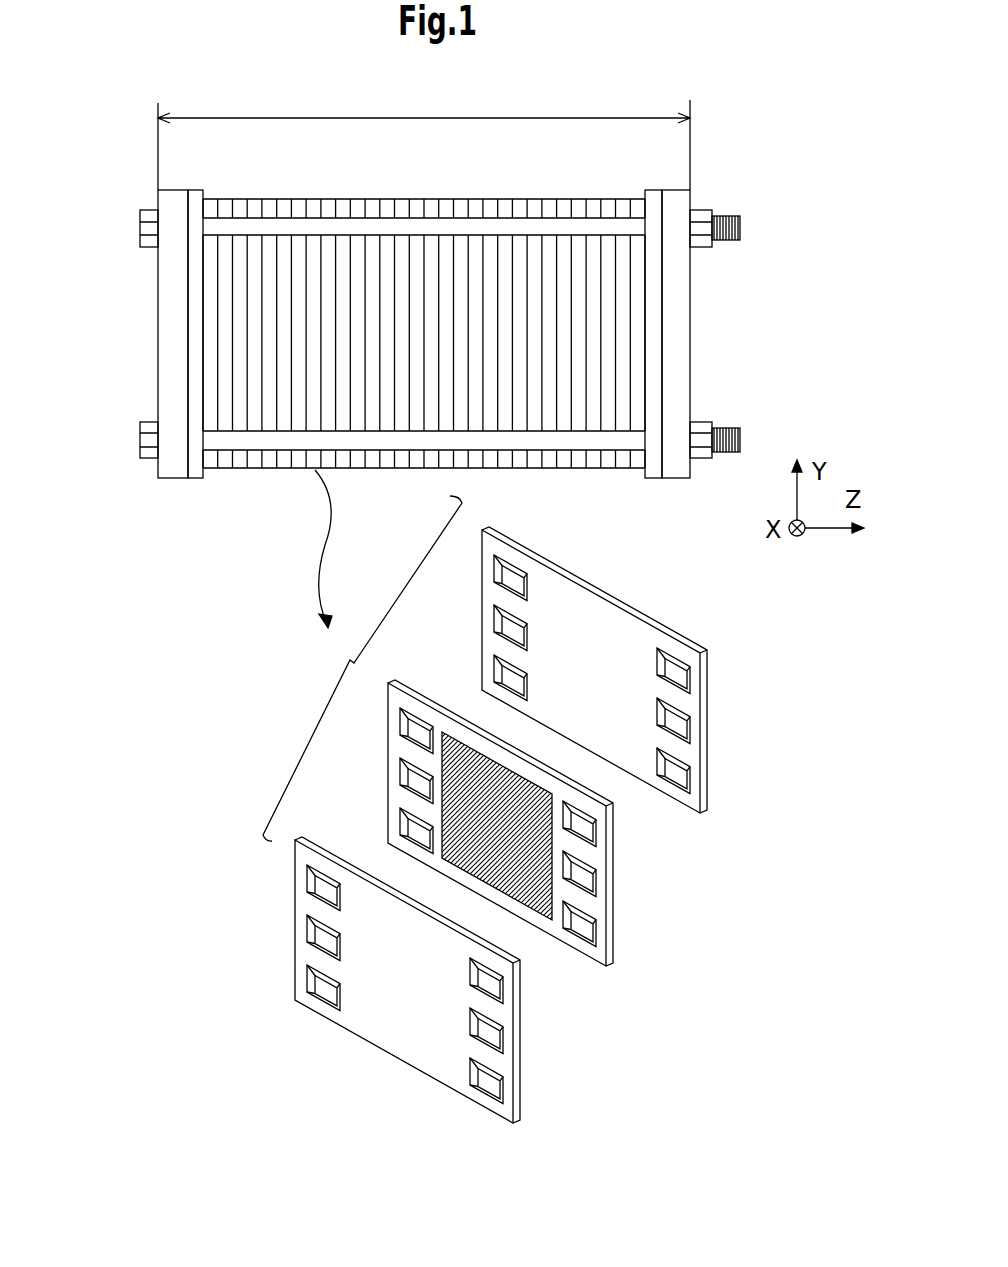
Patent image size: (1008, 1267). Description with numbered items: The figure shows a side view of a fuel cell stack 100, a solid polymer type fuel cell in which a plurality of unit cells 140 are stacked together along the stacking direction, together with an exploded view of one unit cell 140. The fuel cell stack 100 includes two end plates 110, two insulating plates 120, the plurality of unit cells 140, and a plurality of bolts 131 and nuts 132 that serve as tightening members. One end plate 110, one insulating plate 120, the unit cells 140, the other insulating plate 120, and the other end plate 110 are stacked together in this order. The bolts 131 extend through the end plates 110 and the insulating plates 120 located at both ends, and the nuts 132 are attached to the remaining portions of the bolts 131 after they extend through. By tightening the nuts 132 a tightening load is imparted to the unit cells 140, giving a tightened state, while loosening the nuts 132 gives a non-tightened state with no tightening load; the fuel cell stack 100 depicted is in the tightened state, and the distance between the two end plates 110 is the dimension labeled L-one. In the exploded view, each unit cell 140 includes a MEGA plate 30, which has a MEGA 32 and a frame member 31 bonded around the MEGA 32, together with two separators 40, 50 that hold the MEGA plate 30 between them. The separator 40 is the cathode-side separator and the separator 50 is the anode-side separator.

The fuel cell stack 100 is at (739, 130).
The end plate 110 is at (175, 190).
The insulating plate 120 is at (200, 191).
The bolt 131 is at (140, 228).
The nut 132 is at (705, 208).
The unit cell 140 is at (328, 200).
The MEGA plate 30 is at (499, 865).
The frame member 31 is at (616, 945).
The MEGA 32 is at (707, 955).
The separator 40 is at (608, 593).
The separator 50 is at (408, 1064).